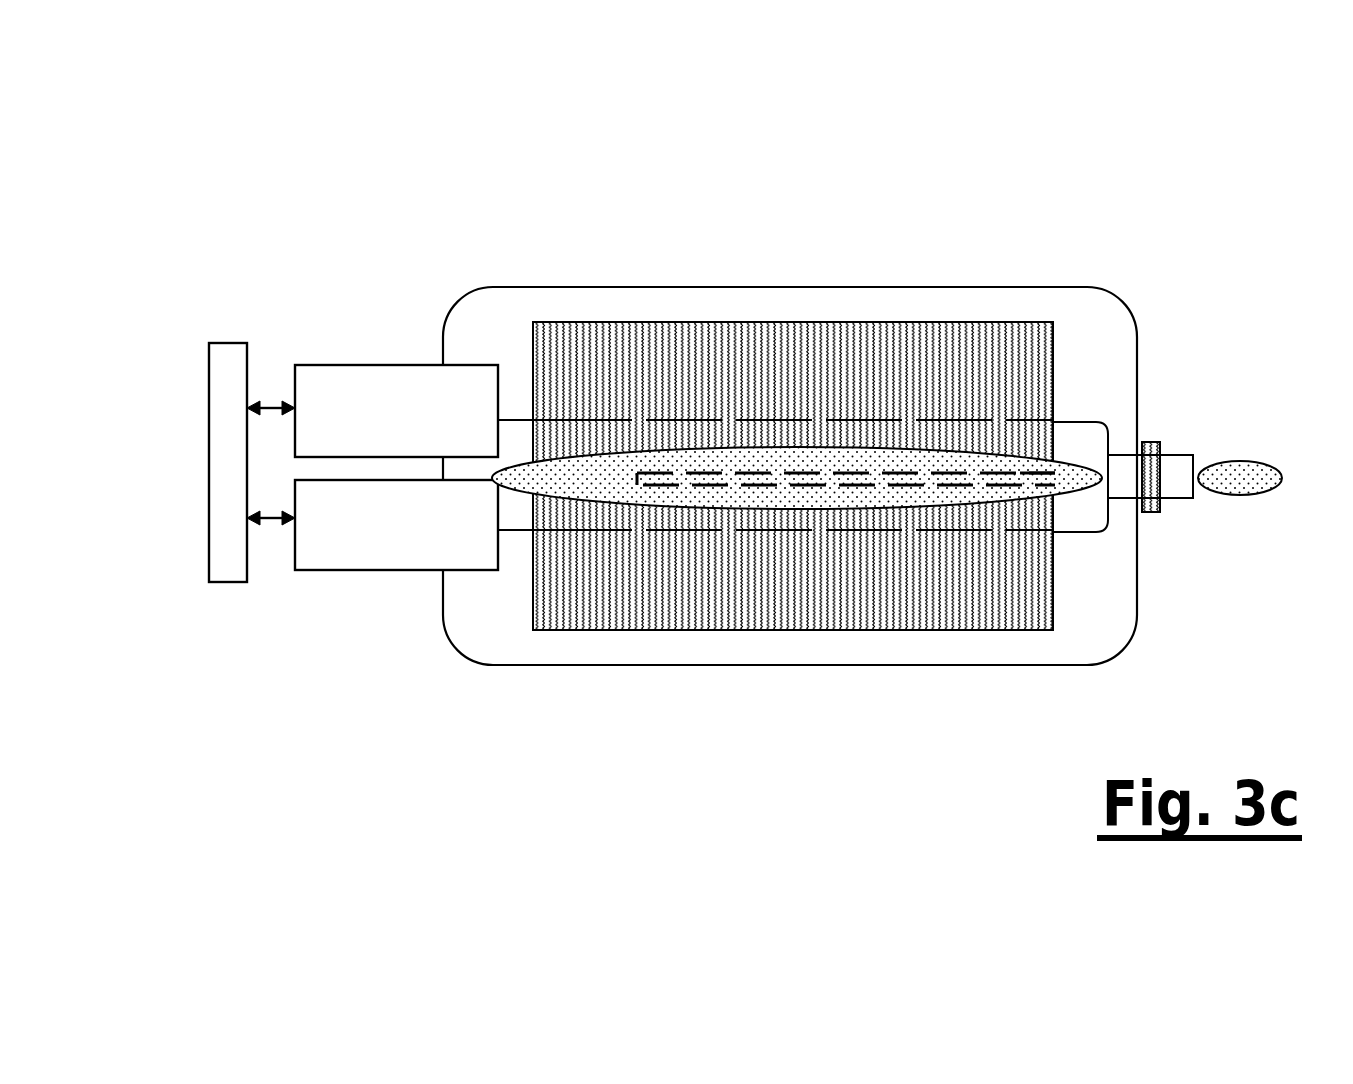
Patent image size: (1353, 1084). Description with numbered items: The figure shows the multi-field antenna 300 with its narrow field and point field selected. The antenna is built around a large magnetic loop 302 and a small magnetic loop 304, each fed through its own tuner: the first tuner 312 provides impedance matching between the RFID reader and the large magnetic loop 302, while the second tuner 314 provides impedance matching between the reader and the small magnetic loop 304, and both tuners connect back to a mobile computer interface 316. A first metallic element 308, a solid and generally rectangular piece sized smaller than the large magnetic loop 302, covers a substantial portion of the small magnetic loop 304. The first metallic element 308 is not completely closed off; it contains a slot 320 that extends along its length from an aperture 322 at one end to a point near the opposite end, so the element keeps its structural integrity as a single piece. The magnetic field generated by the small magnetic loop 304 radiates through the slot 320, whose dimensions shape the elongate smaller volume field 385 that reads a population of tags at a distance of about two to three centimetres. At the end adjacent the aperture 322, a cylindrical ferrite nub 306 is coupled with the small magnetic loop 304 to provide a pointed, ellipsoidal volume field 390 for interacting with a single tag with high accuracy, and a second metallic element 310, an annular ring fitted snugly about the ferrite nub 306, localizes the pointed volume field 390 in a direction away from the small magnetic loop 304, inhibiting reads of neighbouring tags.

The multi-field antenna 300 is at (698, 477).
The large magnetic loop 302 is at (760, 287).
The small magnetic loop 304 is at (1077, 417).
The ferrite nub 306 is at (1185, 487).
The first metallic element 308 is at (638, 632).
The second metallic element 310 is at (1154, 442).
The first tuner 312 is at (418, 365).
The second tuner 314 is at (430, 572).
The mobile computer interface 316 is at (217, 525).
The slot 320 is at (703, 483).
The aperture 322 is at (1053, 478).
The smaller volume field 385 is at (595, 460).
The pointed volume field 390 is at (1228, 480).